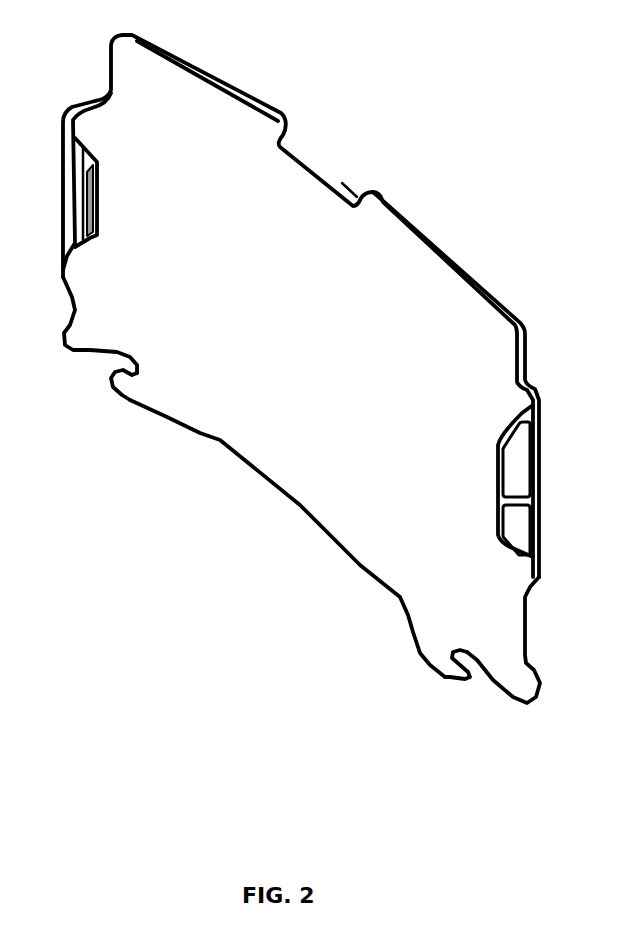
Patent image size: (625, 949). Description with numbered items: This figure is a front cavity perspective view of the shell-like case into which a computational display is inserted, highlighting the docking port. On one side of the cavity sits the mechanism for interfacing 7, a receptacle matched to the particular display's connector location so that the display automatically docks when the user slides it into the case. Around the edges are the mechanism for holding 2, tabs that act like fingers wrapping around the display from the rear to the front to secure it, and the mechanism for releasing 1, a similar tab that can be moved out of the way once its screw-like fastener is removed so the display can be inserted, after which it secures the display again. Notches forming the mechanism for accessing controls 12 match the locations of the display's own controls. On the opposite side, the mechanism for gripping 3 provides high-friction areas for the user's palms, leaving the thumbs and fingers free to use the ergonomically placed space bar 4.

The mechanism for releasing 1 is at (365, 200).
The mechanism for holding 2 is at (117, 382).
The mechanism for gripping 3 is at (513, 527).
The space bar 4 is at (523, 472).
The mechanism for interfacing 7 is at (80, 195).
The mechanism for accessing controls 12 is at (67, 305).